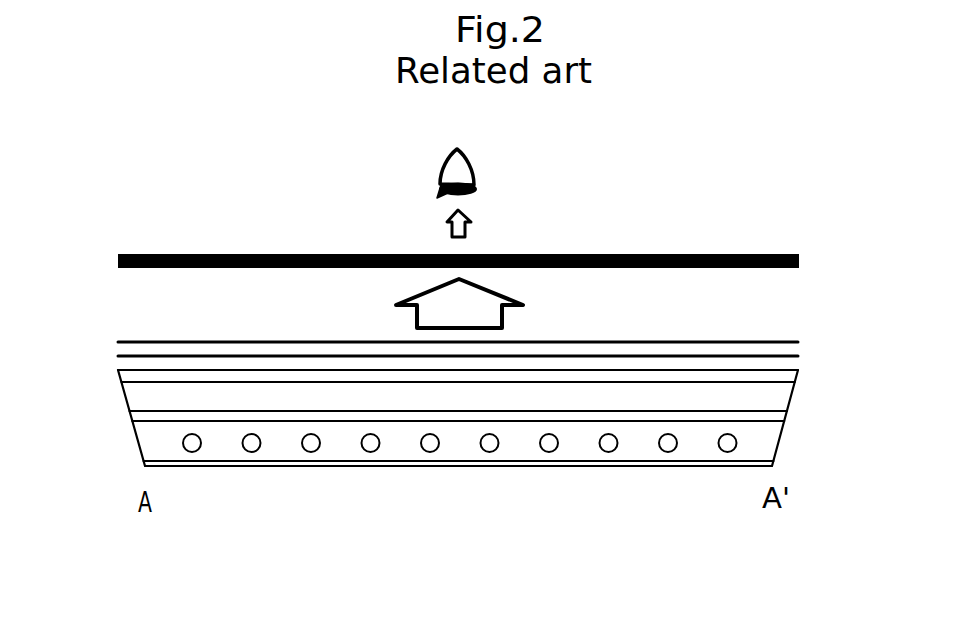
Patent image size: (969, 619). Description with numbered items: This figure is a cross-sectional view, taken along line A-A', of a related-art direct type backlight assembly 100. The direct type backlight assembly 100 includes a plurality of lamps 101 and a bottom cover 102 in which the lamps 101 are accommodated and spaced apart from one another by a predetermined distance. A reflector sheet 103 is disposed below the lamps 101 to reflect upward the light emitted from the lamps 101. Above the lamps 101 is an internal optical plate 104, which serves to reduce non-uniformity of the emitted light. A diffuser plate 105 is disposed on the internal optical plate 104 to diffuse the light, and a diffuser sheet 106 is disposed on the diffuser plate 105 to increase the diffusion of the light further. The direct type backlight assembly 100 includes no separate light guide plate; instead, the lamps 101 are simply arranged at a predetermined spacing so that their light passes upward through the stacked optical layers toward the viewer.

The direct type backlight assembly 100 is at (456, 431).
The lamps 101 is at (253, 447).
The bottom cover 102 is at (698, 447).
The reflector sheet 103 is at (358, 463).
The internal optical plate 104 is at (780, 417).
The diffuser plate 105 is at (792, 378).
The diffuser sheet 106 is at (786, 358).